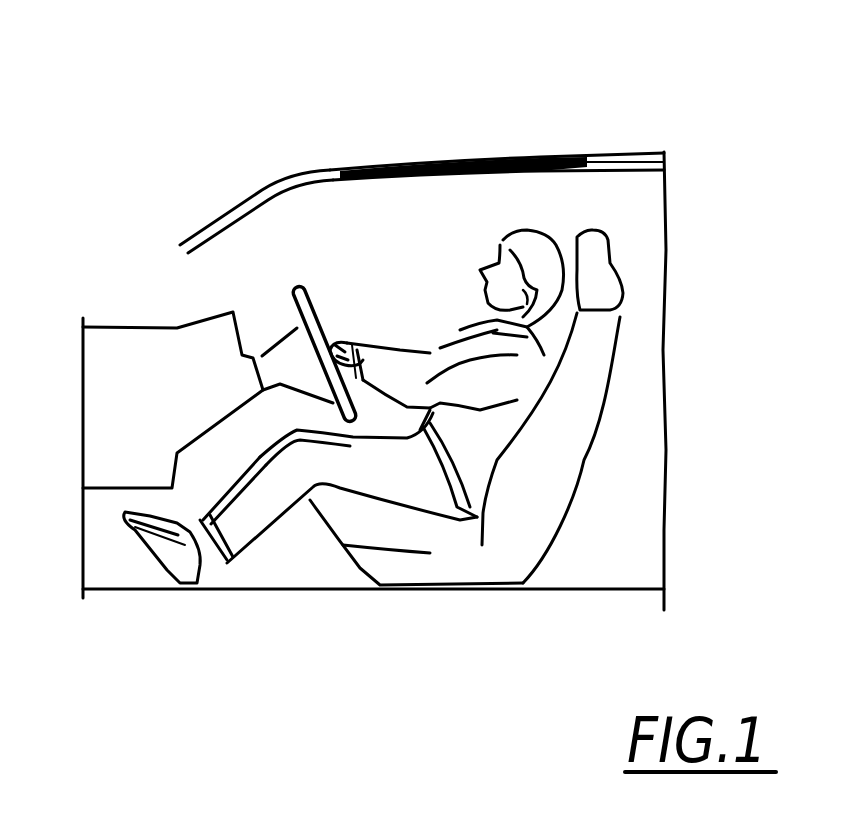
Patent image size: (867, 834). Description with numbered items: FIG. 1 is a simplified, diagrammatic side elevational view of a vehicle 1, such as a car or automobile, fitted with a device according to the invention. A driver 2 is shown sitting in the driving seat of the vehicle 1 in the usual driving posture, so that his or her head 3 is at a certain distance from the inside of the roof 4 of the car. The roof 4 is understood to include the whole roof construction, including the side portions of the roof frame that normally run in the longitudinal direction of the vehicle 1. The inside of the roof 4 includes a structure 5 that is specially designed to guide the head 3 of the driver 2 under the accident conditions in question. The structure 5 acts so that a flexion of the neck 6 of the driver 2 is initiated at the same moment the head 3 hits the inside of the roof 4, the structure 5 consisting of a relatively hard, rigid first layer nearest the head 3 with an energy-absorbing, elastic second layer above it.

The vehicle 1 is at (197, 230).
The driver 2 is at (481, 448).
The head 3 is at (532, 240).
The roof 4 is at (621, 167).
The structure 5 is at (459, 153).
The neck 6 is at (531, 326).